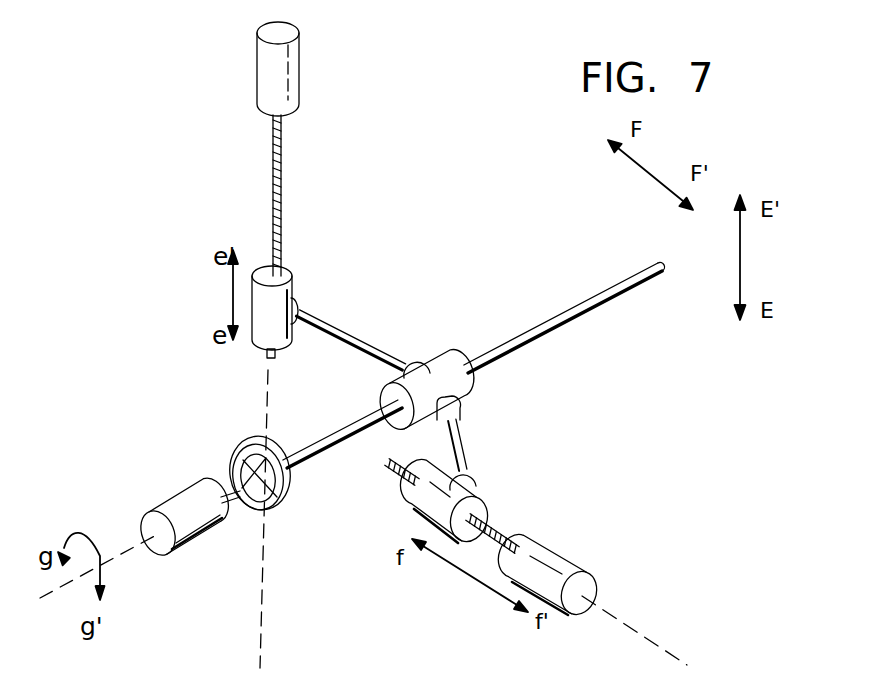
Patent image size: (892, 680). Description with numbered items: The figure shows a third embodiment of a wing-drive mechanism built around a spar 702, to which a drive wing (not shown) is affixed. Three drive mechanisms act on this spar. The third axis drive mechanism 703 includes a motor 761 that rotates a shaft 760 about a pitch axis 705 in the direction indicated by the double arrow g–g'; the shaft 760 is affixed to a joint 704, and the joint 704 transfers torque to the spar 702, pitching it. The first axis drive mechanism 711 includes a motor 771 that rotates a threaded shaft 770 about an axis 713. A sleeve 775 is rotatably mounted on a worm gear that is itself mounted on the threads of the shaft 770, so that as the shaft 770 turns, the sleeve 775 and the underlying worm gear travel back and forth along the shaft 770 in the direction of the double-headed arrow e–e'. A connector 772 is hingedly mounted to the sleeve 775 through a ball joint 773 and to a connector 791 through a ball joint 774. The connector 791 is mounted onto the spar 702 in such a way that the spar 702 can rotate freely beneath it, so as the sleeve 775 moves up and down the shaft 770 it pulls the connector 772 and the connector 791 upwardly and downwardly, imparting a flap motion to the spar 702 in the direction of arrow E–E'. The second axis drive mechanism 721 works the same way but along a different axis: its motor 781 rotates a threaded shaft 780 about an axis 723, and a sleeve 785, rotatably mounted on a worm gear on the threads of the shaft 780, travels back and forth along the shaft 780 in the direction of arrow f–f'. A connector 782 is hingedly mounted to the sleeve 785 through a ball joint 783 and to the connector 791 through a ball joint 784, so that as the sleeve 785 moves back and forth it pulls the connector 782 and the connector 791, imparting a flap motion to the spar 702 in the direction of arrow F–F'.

The spar 702 is at (540, 322).
The third axis drive mechanism 703 is at (222, 454).
The joint 704 is at (252, 437).
The pitch axis 705 is at (90, 572).
The first axis drive mechanism 711 is at (263, 310).
The axis 713 is at (263, 580).
The second axis drive mechanism 721 is at (538, 500).
The axis 723 is at (630, 627).
The shaft 760 is at (222, 497).
The motor 761 is at (167, 507).
The shaft 770 is at (272, 172).
The motor 771 is at (271, 83).
The connector 772 is at (336, 323).
The ball joint 773 is at (298, 297).
The ball joint 774 is at (421, 360).
The sleeve 775 is at (265, 335).
The shaft 780 is at (518, 536).
The motor 781 is at (598, 572).
The connector 782 is at (466, 440).
The ball joint 783 is at (477, 482).
The ball joint 784 is at (465, 405).
The sleeve 785 is at (407, 510).
The connector 791 is at (455, 352).